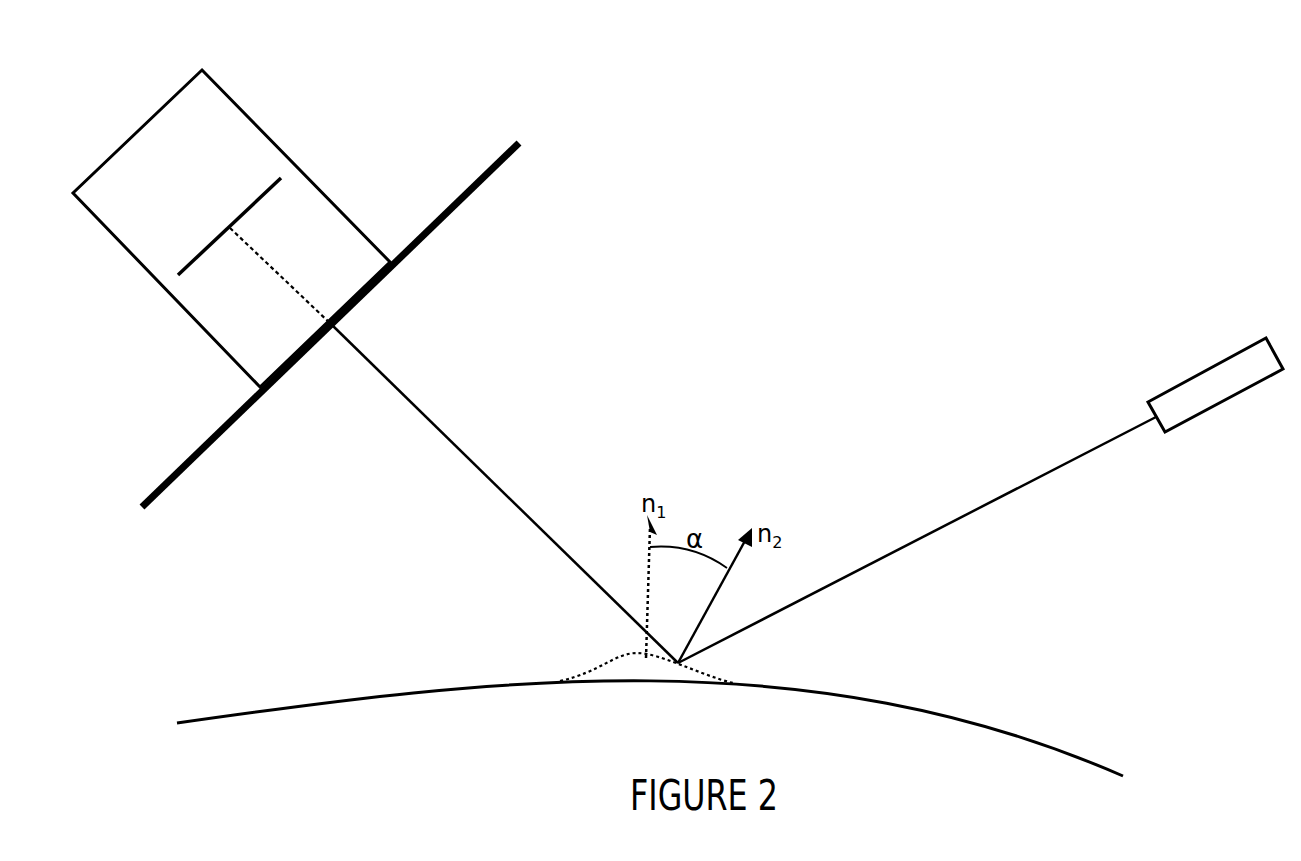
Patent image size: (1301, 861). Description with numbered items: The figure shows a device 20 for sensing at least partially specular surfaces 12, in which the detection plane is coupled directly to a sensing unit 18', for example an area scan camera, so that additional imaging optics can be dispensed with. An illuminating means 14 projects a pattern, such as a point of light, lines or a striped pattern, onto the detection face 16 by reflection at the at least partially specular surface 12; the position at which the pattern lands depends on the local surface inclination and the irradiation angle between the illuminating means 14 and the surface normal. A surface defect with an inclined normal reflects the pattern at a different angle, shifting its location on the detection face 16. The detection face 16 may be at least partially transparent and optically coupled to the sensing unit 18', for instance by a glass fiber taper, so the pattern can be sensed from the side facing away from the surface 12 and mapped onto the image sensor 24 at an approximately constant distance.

The at least partially specular surface 12 is at (1075, 751).
The illuminating means 14 is at (1228, 398).
The detection face 16 is at (494, 175).
The sensing unit 18' is at (223, 226).
The device for sensing at least partially specular surfaces 20 is at (223, 203).
The image sensor 24 is at (246, 208).